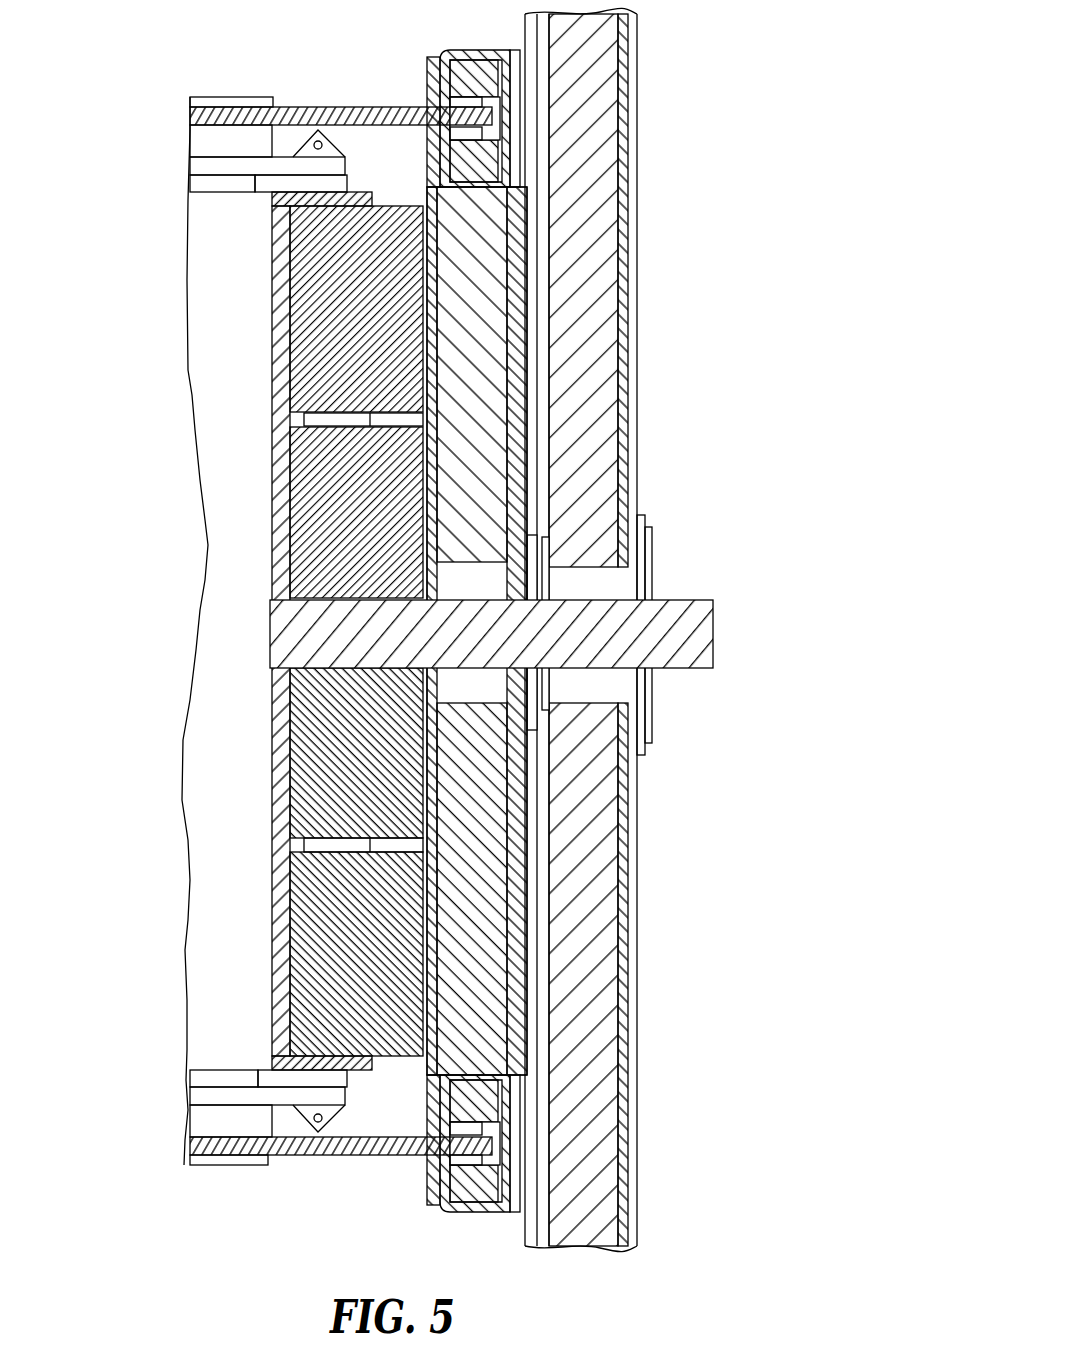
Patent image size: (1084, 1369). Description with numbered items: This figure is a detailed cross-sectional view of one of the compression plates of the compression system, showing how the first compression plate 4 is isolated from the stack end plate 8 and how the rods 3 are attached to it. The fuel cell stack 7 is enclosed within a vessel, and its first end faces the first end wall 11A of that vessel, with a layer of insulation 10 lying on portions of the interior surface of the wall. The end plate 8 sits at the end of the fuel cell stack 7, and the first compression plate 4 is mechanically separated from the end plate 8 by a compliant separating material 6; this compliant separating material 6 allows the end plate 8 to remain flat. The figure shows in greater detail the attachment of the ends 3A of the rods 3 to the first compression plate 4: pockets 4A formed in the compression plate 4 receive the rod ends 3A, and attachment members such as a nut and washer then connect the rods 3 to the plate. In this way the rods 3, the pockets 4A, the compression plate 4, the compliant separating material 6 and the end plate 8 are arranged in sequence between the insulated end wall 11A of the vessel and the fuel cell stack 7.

The rod 3 is at (190, 113).
The rod end 3A is at (352, 117).
The first compression plate 4 is at (488, 923).
The pocket 4A is at (485, 98).
The compliant separating material 6 is at (397, 1033).
The fuel cell stack 7 is at (210, 281).
The end plate 8 is at (687, 622).
The layer of insulation 10 is at (598, 188).
The first end wall 11A is at (627, 385).